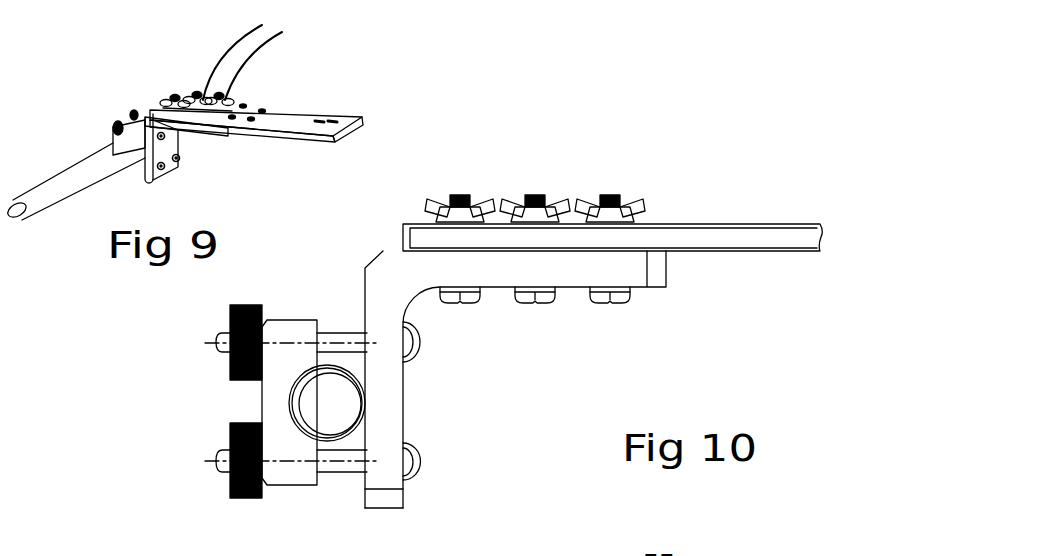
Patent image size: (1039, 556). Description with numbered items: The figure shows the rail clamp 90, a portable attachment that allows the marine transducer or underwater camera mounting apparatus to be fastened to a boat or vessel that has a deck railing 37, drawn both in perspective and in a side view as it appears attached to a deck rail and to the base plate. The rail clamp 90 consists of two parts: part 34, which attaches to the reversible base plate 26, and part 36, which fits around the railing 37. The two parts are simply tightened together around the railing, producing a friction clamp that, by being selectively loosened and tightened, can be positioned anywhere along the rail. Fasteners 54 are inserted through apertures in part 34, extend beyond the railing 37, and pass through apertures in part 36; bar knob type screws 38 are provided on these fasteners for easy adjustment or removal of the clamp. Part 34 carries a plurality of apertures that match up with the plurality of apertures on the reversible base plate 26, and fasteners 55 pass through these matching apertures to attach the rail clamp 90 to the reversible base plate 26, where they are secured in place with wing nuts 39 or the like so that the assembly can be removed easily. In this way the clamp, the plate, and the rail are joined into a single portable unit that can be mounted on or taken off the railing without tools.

In FIG. 9, the reversible base plate 26 is at (300, 105).
In FIG. 10, the reversible base plate 26 is at (733, 253).
In FIG. 9, the part (of rail clamp) that attaches to the base plate 34 is at (157, 182).
In FIG. 10, the part (of rail clamp) that attaches to the base plate 34 is at (385, 508).
In FIG. 9, the part (of rail clamp) that fits around the railing 36 is at (107, 143).
In FIG. 10, the part (of rail clamp) that fits around the railing 36 is at (300, 487).
In FIG. 9, the deck railing 37 is at (245, 66).
In FIG. 10, the deck railing 37 is at (332, 366).
In FIG. 9, the bar knob type screws 38 is at (138, 112).
In FIG. 10, the bar knob type screws 38 is at (222, 340).
In FIG. 10, the wing nuts 39 is at (648, 200).
In FIG. 9, the fasteners 54 is at (186, 157).
In FIG. 10, the fasteners 54 is at (415, 462).
In FIG. 9, the fasteners 55 is at (193, 96).
In FIG. 10, the fasteners 55 is at (605, 305).
In FIG. 10, the rail clamp 90 is at (414, 403).